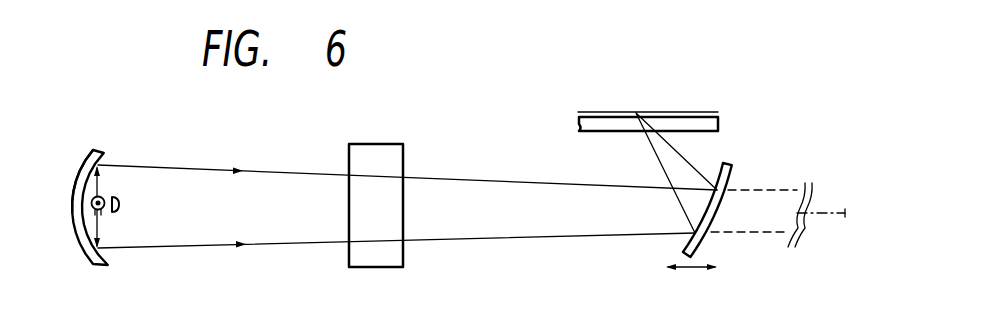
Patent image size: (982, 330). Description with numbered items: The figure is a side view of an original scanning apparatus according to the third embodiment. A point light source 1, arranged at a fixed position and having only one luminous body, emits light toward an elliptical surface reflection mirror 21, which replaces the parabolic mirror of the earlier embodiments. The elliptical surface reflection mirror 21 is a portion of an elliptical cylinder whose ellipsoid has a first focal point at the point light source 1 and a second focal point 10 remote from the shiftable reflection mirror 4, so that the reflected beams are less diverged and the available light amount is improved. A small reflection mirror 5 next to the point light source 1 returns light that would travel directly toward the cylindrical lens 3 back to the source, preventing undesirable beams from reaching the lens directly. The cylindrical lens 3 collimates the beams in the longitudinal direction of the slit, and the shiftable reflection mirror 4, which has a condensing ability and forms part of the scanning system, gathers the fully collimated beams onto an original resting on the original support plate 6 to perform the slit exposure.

The point light source 1 is at (95, 207).
The elliptical surface reflection mirror 21 is at (95, 149).
The small reflection mirror 5 is at (120, 204).
The cylindrical lens 3 is at (380, 145).
The original support plate 6 is at (720, 124).
The shiftable reflection mirror 4 is at (715, 218).
The second focal point 10 is at (845, 213).